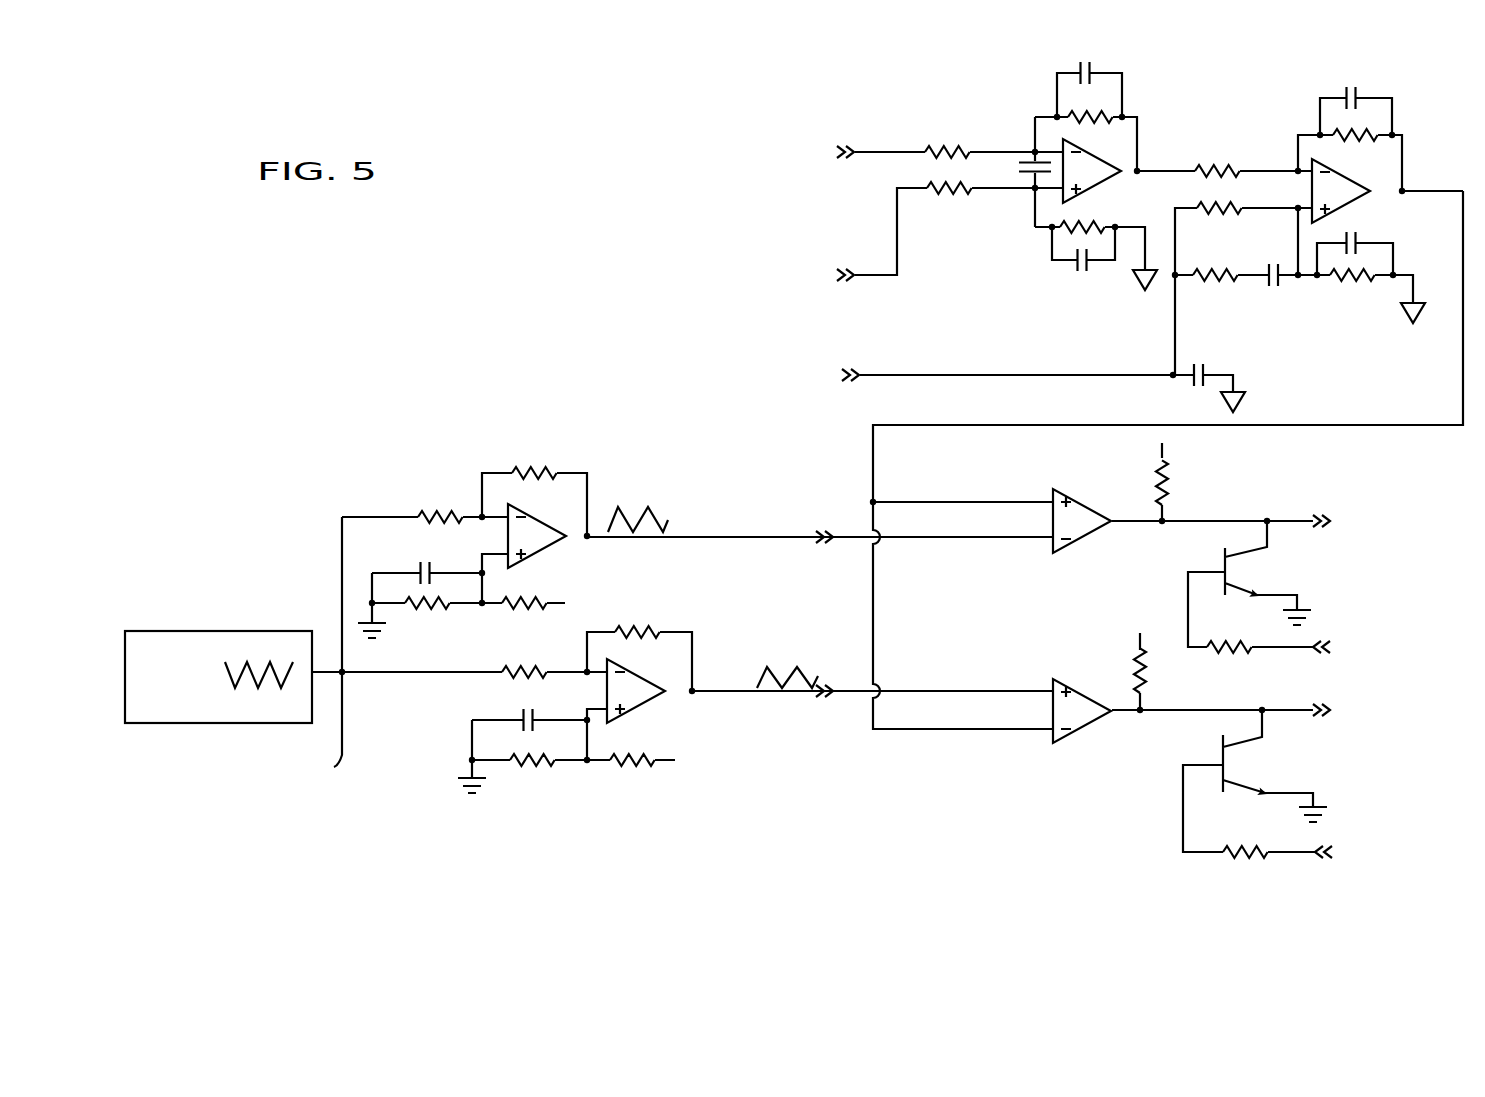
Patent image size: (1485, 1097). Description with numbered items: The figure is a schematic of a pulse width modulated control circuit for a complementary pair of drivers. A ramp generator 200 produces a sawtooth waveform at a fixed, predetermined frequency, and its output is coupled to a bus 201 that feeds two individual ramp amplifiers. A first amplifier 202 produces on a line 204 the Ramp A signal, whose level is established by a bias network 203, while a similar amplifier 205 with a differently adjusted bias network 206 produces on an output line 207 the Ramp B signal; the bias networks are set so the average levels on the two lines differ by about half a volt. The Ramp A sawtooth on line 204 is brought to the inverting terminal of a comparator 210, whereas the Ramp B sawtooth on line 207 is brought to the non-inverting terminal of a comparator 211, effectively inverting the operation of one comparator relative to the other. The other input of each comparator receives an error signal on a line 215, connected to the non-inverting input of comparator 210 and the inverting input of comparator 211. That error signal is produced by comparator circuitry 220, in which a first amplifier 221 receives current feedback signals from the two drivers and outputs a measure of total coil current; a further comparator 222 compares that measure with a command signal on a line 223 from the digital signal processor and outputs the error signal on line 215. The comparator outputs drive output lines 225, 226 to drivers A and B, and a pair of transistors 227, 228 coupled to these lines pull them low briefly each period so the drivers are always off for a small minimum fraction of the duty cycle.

The ramp generator 200 is at (186, 723).
The bus 201 is at (342, 745).
The first amplifier 202 is at (628, 480).
The bias network 203 is at (488, 622).
The line 204 is at (788, 535).
The amplifier 205 is at (655, 657).
The bias network 206 is at (659, 741).
The output line 207 is at (825, 687).
The comparator 210 is at (1070, 490).
The comparator 211 is at (1093, 729).
The line 215 is at (875, 456).
The comparator circuitry 220 is at (1252, 53).
The first amplifier 221 is at (1101, 160).
The comparator 222 is at (1300, 158).
The line 223 is at (1174, 335).
The output line 225 is at (1292, 518).
The output line 226 is at (1290, 708).
The transistor 227 is at (1240, 573).
The transistor 228 is at (1245, 765).